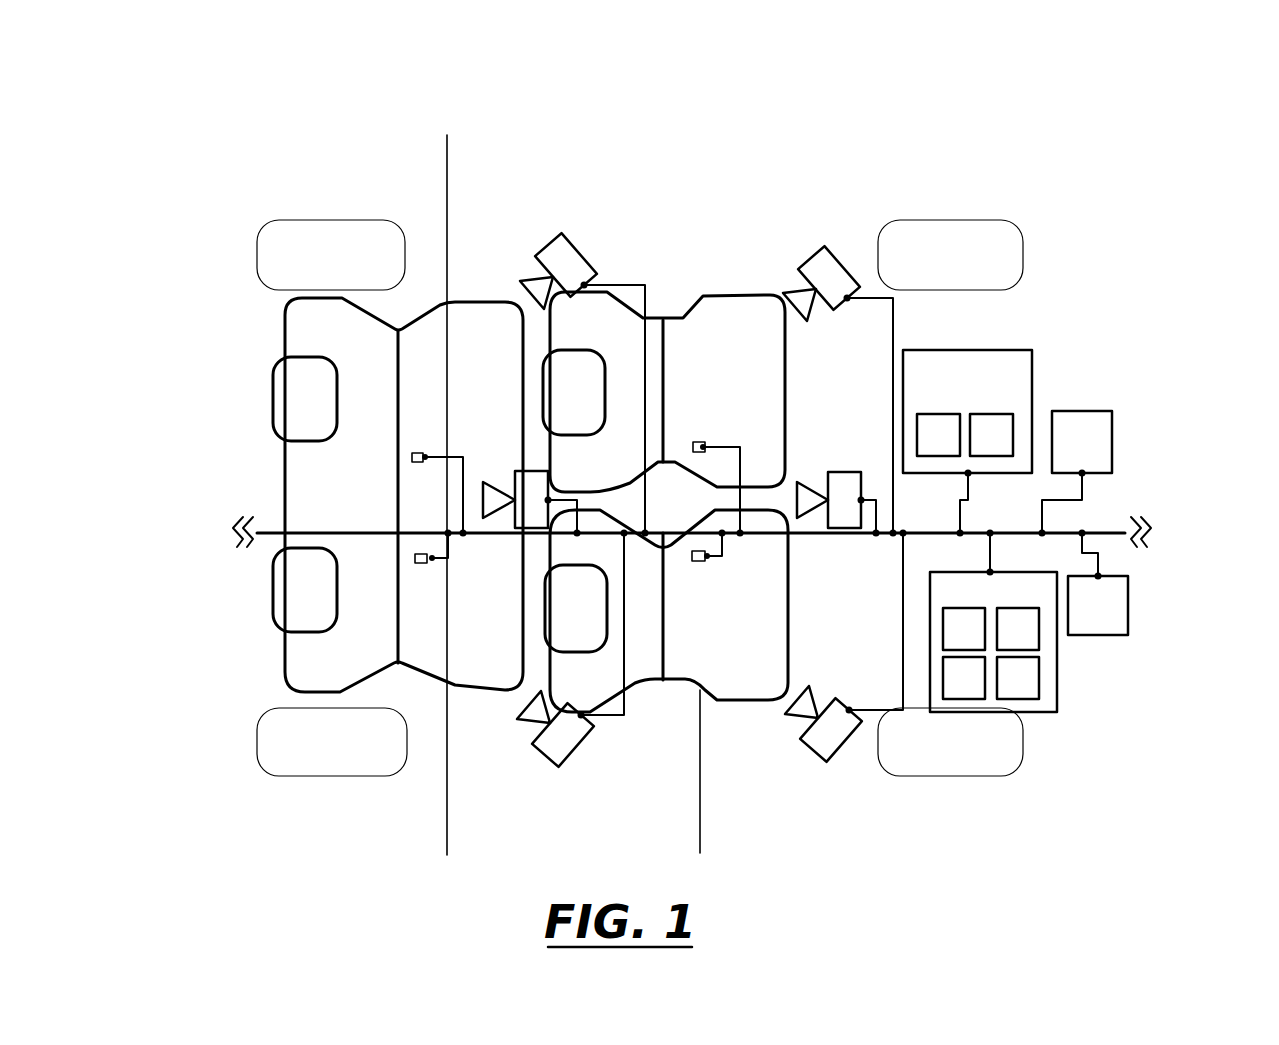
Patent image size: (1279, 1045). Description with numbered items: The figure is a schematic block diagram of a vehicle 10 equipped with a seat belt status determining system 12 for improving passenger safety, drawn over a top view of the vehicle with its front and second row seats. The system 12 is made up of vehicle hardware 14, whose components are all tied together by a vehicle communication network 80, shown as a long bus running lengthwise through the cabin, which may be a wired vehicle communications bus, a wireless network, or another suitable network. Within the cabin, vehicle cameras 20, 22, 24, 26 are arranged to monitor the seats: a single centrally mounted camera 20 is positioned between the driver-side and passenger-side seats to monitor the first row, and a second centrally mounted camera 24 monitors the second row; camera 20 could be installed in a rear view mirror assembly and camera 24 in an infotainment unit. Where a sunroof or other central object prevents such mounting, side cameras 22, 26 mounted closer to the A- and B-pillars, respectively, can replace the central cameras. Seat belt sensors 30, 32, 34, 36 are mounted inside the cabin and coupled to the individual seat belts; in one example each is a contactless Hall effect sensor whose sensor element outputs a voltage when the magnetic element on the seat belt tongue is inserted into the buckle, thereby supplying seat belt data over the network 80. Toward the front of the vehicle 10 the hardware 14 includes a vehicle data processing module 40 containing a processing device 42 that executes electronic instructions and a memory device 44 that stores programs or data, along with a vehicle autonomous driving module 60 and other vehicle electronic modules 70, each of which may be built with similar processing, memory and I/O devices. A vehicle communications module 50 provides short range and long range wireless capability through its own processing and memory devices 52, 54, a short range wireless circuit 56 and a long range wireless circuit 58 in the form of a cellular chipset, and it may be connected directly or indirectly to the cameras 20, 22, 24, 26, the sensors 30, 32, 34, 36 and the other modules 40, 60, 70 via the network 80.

The vehicle 10 is at (1190, 70).
The seat belt status determining system 12 is at (510, 143).
The vehicle hardware 14 is at (1034, 314).
The vehicle camera 20 is at (835, 472).
The side camera 22 is at (828, 258).
The vehicle camera 24 is at (527, 470).
The side camera 26 is at (566, 244).
The seat belt sensor 30 is at (706, 442).
The seat belt sensor 32 is at (702, 562).
The seat belt sensor 34 is at (425, 452).
The seat belt sensor 36 is at (423, 566).
The vehicle data processing module 40 is at (967, 441).
The processing device 42 is at (938, 435).
The memory device 44 is at (991, 435).
The vehicle communications module 50 is at (993, 622).
The processing device 52 is at (964, 629).
The memory device 54 is at (1018, 629).
The short range wireless circuit 56 is at (964, 679).
The long range wireless circuit 58 is at (1018, 679).
The vehicle autonomous driving module 60 is at (1077, 472).
The other vehicle electronic modules 70 is at (1098, 584).
The vehicle communication network 80 is at (312, 531).